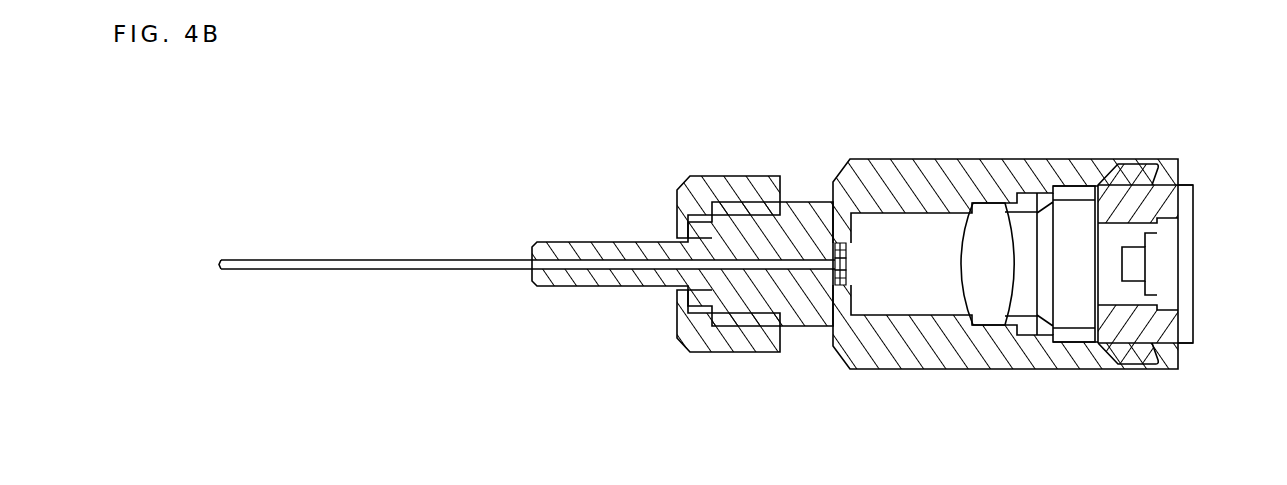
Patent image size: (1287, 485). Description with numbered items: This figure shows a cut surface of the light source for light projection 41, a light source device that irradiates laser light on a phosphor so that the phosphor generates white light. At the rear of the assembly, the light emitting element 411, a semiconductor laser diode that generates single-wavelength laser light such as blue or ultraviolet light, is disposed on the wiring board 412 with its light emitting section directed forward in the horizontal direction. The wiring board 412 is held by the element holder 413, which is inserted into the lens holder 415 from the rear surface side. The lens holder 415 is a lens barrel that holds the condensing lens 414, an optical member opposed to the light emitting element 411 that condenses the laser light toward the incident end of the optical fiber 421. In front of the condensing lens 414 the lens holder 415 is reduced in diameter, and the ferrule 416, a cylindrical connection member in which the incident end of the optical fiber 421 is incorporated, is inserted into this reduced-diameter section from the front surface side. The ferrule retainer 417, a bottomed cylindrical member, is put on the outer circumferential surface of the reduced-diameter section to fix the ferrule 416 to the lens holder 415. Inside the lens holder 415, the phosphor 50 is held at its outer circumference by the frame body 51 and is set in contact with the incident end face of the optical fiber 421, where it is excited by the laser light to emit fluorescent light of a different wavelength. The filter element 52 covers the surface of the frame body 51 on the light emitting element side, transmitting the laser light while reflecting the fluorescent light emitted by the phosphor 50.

The light source for light projection 41 is at (1051, 206).
The light emitting element 411 is at (1137, 247).
The wiring board 412 is at (1194, 206).
The element holder 413 is at (1176, 164).
The condensing lens 414 is at (993, 213).
The lens holder 415 is at (943, 159).
The ferrule 416 is at (589, 241).
The ferrule retainer 417 is at (750, 176).
The optical fiber 421 is at (397, 260).
The phosphor 50 is at (846, 264).
The frame body 51 is at (846, 251).
The filter element 52 is at (846, 277).